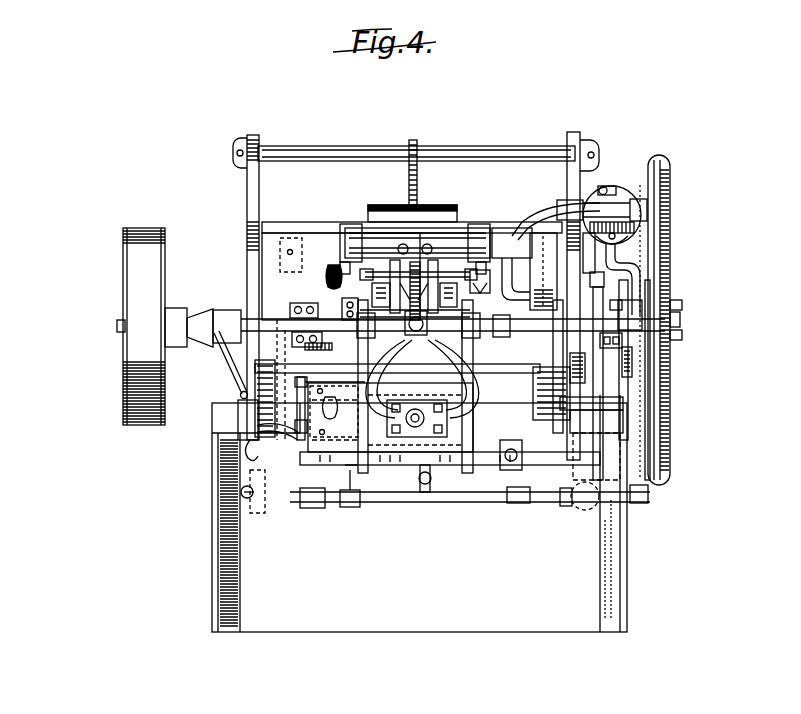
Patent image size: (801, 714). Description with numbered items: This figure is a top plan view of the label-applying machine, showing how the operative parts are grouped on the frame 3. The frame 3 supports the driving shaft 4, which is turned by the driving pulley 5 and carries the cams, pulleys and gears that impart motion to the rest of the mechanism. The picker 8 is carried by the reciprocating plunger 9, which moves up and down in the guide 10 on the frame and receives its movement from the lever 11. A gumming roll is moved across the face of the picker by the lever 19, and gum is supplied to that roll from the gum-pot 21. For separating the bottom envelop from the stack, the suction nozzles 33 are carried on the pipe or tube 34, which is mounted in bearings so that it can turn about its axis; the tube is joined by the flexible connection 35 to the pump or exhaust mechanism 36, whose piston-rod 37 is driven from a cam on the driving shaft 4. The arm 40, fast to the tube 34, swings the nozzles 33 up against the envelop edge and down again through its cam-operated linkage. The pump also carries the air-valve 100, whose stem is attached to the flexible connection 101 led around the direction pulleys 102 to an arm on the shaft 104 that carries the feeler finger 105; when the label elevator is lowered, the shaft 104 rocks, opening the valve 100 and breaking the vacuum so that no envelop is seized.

The frame 3 is at (250, 185).
The driving shaft 4 is at (117, 326).
The driving pulley 5 is at (122, 381).
The picker 8 is at (458, 478).
The reciprocating plunger 9 is at (413, 513).
The guide 10 is at (413, 470).
The lever 11 is at (522, 470).
The lever 19 is at (287, 475).
The gum-pot 21 is at (512, 245).
The suction nozzles 33 is at (403, 250).
The pipe or tube 34 is at (420, 254).
The flexible connection 35 is at (562, 198).
The pump or exhaust mechanism 36 is at (610, 185).
The piston-rod 37 is at (630, 268).
The arm 40 is at (593, 493).
The air-valve 100 is at (640, 222).
The flexible connection 101 is at (655, 397).
The direction pulleys 102 is at (640, 237).
The shaft 104 is at (550, 500).
The feeler finger 105 is at (435, 490).